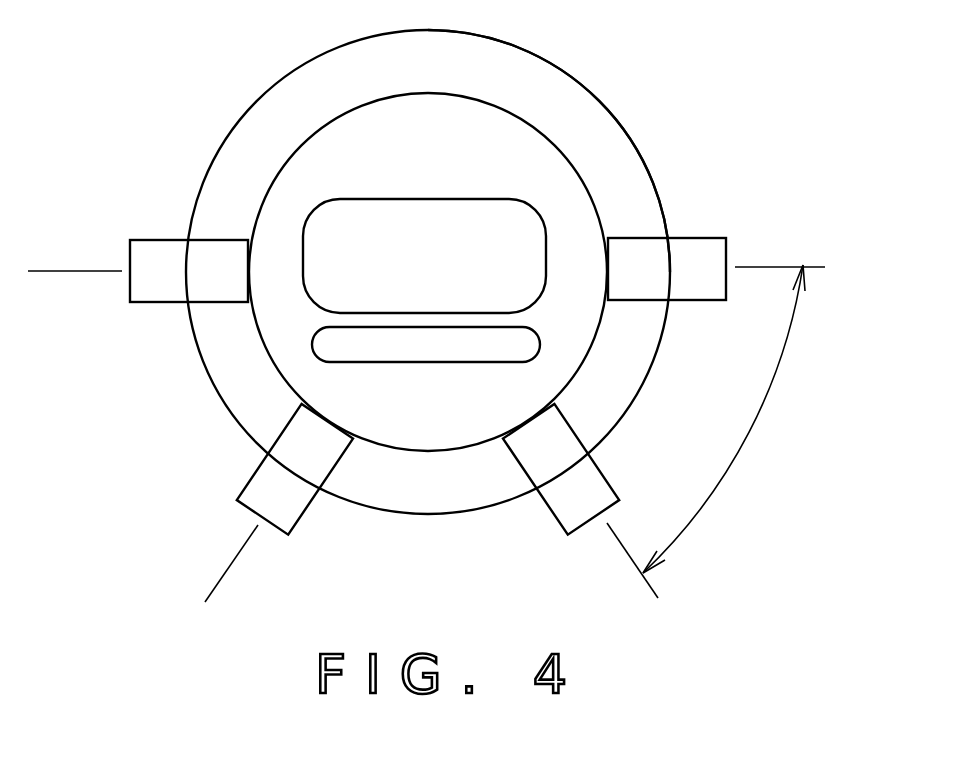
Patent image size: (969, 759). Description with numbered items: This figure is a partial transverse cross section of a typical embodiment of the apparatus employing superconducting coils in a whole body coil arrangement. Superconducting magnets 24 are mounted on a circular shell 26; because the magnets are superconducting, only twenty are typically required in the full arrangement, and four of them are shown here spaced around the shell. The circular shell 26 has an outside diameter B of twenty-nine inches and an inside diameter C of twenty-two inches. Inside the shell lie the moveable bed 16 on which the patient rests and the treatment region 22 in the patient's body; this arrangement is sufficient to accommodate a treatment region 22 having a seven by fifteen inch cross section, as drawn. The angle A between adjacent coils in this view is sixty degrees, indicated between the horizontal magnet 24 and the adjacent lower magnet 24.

The moveable bed 16 is at (312, 345).
The treatment region 22 is at (547, 203).
The superconducting magnets 24 is at (167, 303).
The circular shell 26 is at (617, 387).
The angle between adjacent coils A is at (426, 433).
The outside diameter B is at (242, 113).
The inside diameter C is at (523, 112).